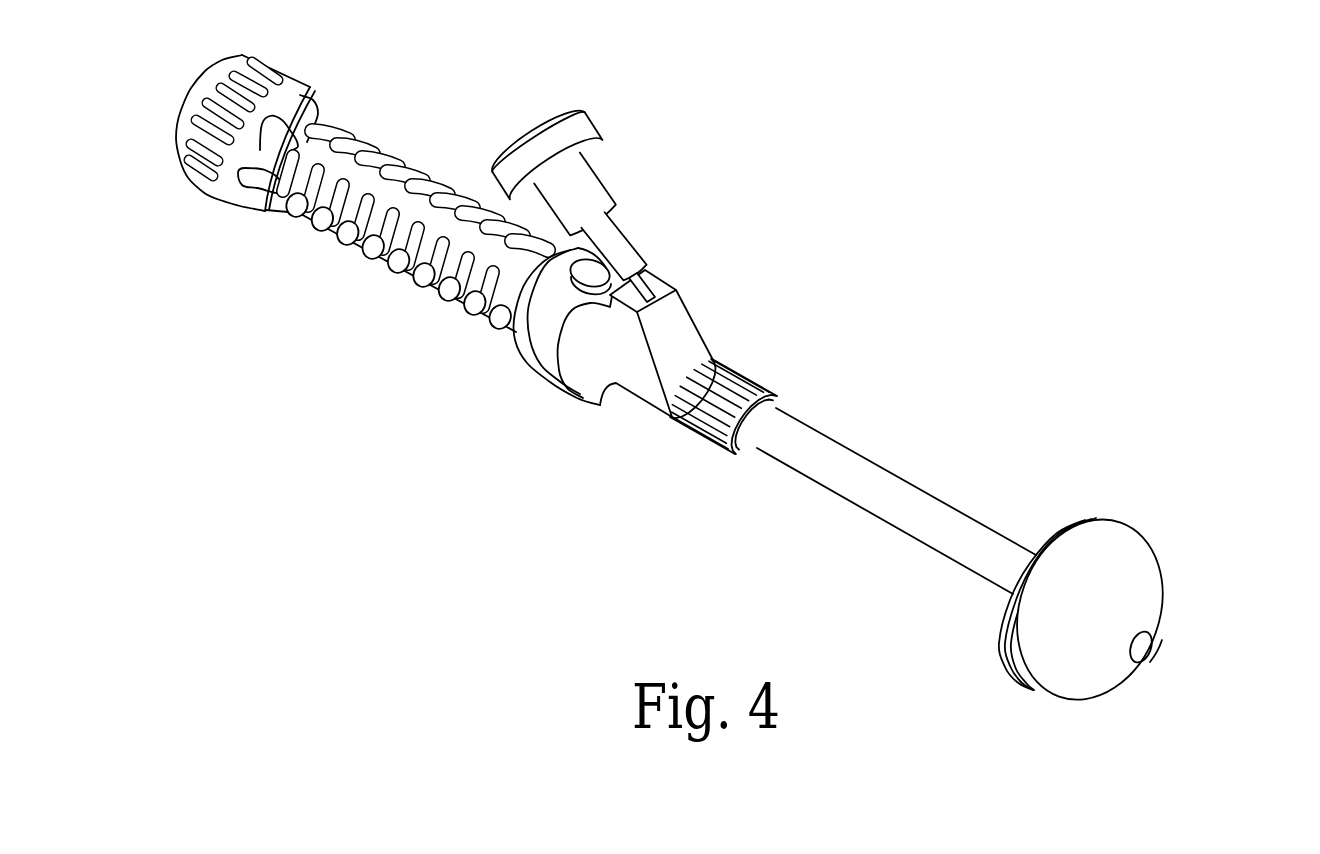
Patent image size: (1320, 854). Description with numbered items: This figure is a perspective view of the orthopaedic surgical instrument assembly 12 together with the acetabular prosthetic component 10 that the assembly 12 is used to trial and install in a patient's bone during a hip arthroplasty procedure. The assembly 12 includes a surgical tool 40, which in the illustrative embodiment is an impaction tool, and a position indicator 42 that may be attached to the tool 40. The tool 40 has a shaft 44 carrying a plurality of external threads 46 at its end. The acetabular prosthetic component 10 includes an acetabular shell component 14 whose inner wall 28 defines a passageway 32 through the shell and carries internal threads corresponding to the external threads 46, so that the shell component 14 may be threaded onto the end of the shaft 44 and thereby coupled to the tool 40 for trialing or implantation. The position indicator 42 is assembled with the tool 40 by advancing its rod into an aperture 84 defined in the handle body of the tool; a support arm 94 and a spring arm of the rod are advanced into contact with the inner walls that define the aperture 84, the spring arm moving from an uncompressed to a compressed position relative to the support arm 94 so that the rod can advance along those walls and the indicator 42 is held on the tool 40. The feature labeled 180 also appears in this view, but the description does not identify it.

The acetabular prosthetic component 10 is at (1140, 610).
The orthopaedic surgical instrument assembly 12 is at (930, 140).
The acetabular shell component 14 is at (1150, 578).
The inner wall 28 is at (1153, 627).
The passageway 32 is at (1168, 665).
The surgical tool 40 is at (768, 322).
The position indicator 42 is at (630, 173).
The shaft 44 is at (920, 508).
The external threads 46 is at (1143, 650).
The aperture 84 is at (668, 281).
The support arm 94 is at (632, 290).
The stem tip 180 is at (642, 282).